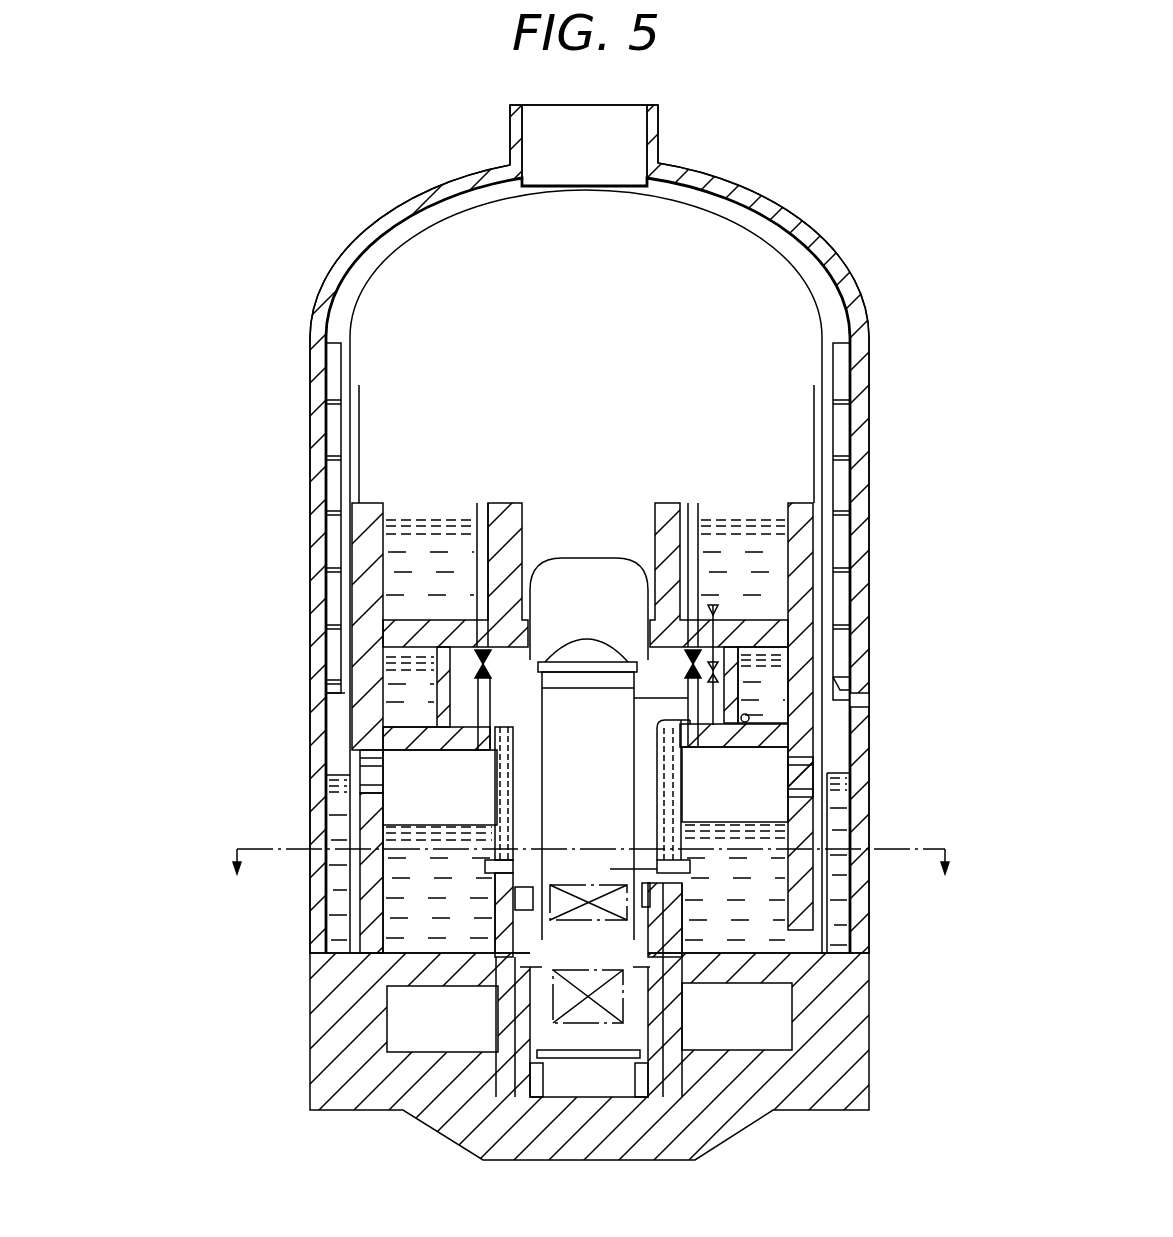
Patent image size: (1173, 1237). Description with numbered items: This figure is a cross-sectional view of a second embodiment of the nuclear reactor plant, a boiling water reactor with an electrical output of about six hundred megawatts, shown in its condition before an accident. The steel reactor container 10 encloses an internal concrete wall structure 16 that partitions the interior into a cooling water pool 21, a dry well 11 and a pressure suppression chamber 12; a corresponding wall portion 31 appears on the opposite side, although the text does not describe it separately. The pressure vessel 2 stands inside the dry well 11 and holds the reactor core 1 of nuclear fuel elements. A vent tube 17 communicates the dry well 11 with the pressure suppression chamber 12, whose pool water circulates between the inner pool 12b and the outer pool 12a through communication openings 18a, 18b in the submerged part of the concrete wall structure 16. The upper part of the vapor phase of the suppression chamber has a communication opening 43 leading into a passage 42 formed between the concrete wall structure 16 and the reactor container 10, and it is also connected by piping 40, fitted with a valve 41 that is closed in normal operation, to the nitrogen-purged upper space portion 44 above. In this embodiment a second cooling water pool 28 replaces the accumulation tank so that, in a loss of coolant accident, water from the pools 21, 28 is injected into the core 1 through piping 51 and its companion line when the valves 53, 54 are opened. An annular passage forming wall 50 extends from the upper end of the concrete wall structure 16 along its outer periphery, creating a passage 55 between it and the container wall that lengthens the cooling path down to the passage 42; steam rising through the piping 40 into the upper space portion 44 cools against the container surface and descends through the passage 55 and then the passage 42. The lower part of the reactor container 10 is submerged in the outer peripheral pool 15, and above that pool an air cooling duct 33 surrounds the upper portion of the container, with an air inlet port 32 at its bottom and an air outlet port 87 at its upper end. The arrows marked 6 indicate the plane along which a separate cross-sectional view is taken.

The reactor core 1 is at (547, 917).
The pressure vessel 2 is at (550, 725).
The section line 6- 6 is at (592, 875).
The reactor container 10 is at (735, 235).
The dry well 11 is at (495, 740).
The pressure suppression chamber 12 is at (360, 911).
The outer pool 12a is at (355, 879).
The inner pool 12b is at (425, 843).
The outer peripheral pool 15 is at (840, 877).
The concrete wall structure 16 is at (375, 510).
The vent tube 17 is at (497, 812).
The lower chamber 18a is at (810, 937).
The upper chamber 18b is at (832, 795).
The cooling water pool 21 is at (437, 520).
The cooling water pool 28 is at (390, 680).
The partition wall 31 is at (815, 505).
The air inlet port 32 is at (851, 700).
The air cooling duct 33 is at (820, 275).
The piping 40 is at (705, 606).
The valve 41 is at (745, 655).
The passage 42 is at (790, 660).
The communication opening 43 is at (812, 762).
The upper space portion 44 is at (395, 318).
The annular passage forming wall 50 is at (869, 382).
The piping 51 is at (740, 640).
The valve 53 is at (822, 682).
The valve 54 is at (722, 748).
The passage 55 is at (816, 430).
The air outlet port 87 is at (635, 130).